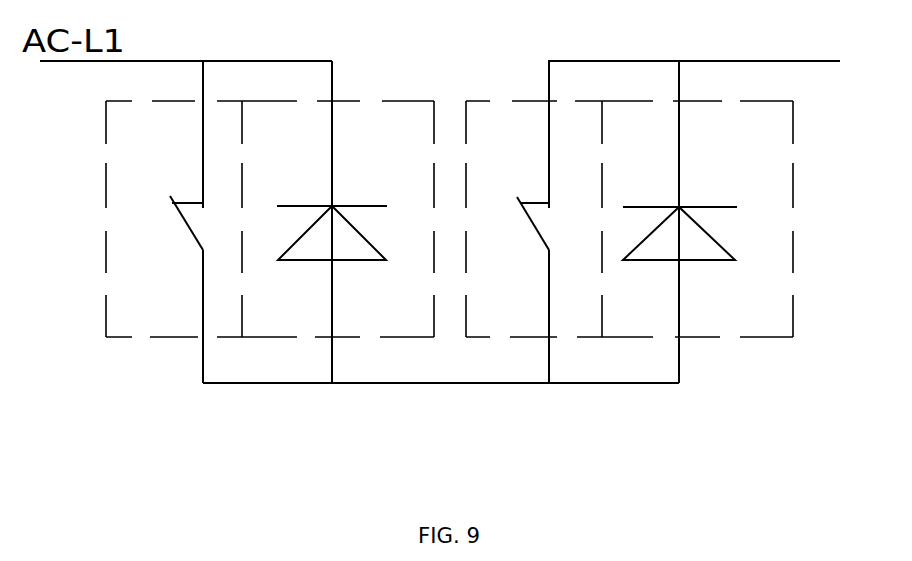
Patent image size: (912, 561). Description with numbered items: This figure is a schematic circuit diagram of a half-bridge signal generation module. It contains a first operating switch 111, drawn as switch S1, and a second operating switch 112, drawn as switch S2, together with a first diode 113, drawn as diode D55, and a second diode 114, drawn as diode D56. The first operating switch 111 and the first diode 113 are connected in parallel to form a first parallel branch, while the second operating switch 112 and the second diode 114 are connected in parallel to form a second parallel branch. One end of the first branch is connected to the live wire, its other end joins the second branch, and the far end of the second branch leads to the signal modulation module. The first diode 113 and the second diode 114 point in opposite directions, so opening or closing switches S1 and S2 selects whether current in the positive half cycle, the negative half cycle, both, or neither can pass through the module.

The first operating switch 111 is at (127, 222).
The second operating switch 112 is at (304, 247).
The first diode 113 is at (575, 255).
The second diode 114 is at (737, 230).
The first switch S1 is at (166, 222).
The second switch S2 is at (513, 222).
The first diode D55 is at (344, 222).
The second diode D56 is at (696, 222).